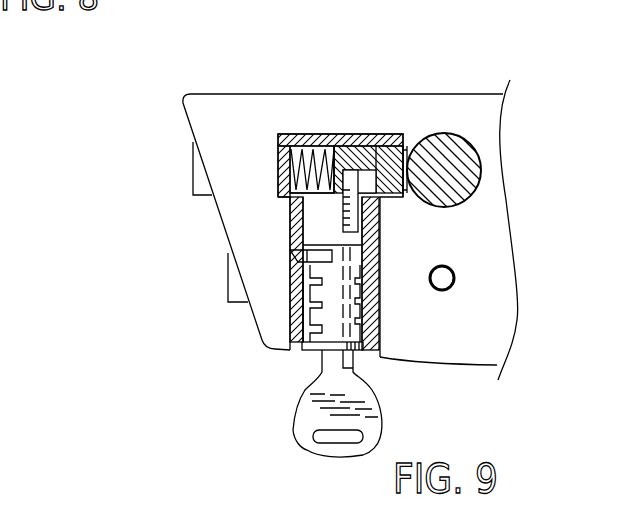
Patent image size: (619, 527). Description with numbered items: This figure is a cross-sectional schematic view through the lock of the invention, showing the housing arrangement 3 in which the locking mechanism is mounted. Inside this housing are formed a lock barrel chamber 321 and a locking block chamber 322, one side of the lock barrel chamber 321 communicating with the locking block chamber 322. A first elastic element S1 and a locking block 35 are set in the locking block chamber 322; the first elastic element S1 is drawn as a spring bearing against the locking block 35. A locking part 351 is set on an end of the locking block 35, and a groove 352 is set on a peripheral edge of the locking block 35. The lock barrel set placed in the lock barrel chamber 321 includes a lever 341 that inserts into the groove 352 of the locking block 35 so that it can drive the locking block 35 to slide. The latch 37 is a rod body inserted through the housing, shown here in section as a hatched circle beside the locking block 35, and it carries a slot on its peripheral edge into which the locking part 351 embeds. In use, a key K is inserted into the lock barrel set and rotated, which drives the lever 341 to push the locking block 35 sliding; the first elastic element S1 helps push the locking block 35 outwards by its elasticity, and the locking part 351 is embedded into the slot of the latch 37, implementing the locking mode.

The housing 3 is at (175, 118).
The lock barrel chamber 321 is at (335, 147).
The locking block chamber 322 is at (320, 147).
The first elastic element S1 is at (293, 147).
The locking block 35 is at (377, 148).
The locking part 351 is at (403, 142).
The groove 352 is at (360, 188).
The lever 341 is at (360, 165).
The latch 37 is at (448, 147).
The key K is at (297, 410).